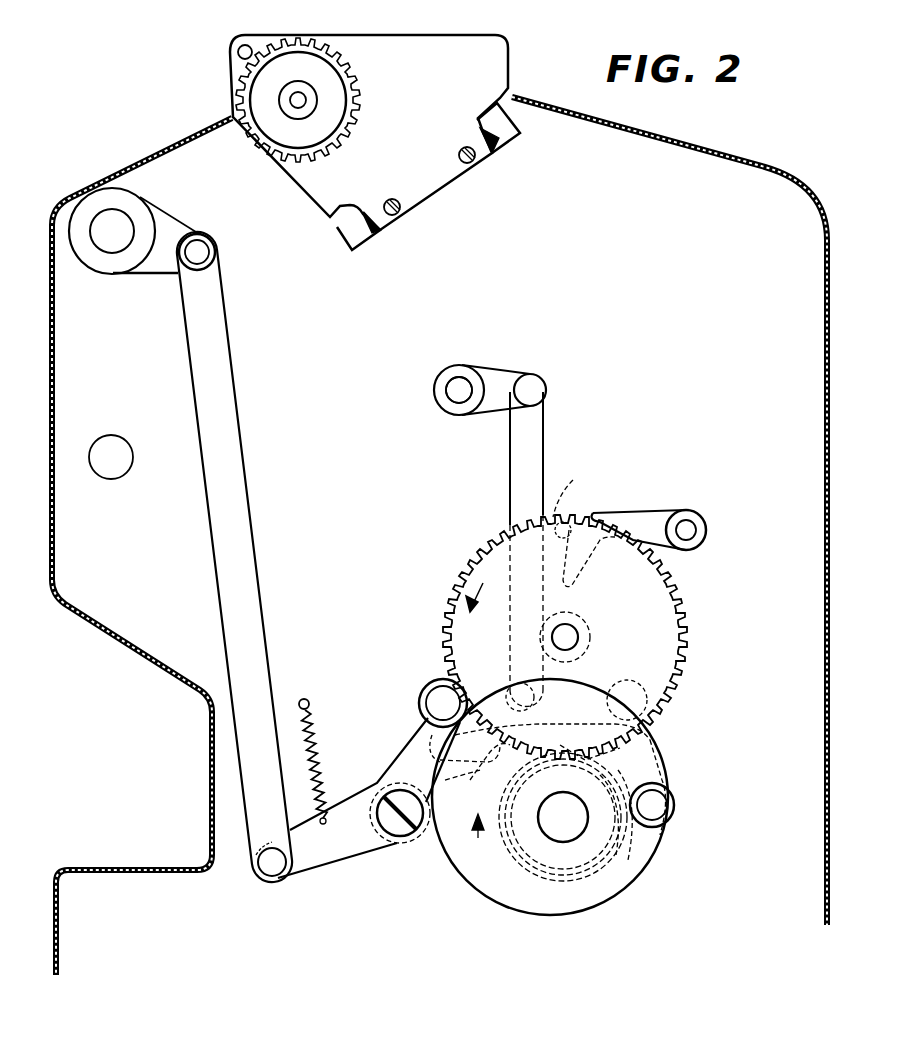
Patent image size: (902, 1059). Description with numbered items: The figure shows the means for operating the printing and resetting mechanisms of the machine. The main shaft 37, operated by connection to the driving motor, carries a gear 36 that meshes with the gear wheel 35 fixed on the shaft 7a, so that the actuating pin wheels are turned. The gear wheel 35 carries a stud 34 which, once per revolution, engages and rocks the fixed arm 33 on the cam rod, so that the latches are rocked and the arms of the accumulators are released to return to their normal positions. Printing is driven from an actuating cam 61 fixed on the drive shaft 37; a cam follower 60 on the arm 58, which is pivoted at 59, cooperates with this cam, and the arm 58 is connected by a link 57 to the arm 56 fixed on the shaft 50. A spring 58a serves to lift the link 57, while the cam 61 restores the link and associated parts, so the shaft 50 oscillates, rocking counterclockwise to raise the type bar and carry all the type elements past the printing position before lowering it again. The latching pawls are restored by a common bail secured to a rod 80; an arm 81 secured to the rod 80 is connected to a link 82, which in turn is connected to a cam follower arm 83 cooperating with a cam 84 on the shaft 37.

The shaft 7a is at (572, 637).
The fixed arm 33 is at (665, 512).
The stud 34 is at (560, 500).
The gear wheel 35 is at (668, 582).
The gear 36 is at (648, 850).
The main shaft 37 is at (572, 830).
The shaft 50 is at (116, 252).
The arm 56 is at (180, 232).
The link 57 is at (268, 640).
The arm 58 is at (342, 858).
The spring 58a is at (320, 755).
The pivot 59 is at (408, 830).
The cam follower 60 is at (420, 698).
The actuating cam 61 is at (505, 900).
The rod 80 is at (455, 400).
The arm 81 is at (505, 380).
The link 82 is at (537, 425).
The cam follower arm 83 is at (668, 790).
The cam 84 is at (630, 875).